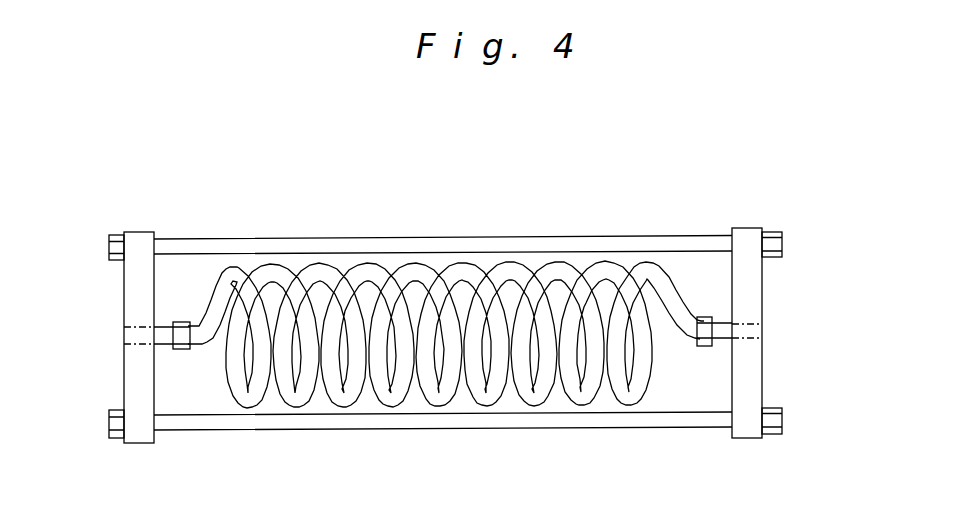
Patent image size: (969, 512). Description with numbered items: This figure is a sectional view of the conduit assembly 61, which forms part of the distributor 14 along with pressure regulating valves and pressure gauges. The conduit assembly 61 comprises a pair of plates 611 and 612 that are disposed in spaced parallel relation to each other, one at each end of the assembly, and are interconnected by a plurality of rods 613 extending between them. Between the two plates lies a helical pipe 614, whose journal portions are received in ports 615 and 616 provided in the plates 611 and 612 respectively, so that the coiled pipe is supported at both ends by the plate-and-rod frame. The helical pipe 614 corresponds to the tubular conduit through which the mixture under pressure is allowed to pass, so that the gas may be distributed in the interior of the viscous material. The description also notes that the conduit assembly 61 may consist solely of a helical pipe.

The distributor 14 is at (261, 141).
The conduit assembly 61 is at (184, 232).
The plate 611 is at (137, 382).
The plate 612 is at (747, 386).
The rods 613 is at (318, 241).
The helical pipe 614 is at (282, 394).
The port 615 is at (140, 342).
The port 616 is at (748, 337).